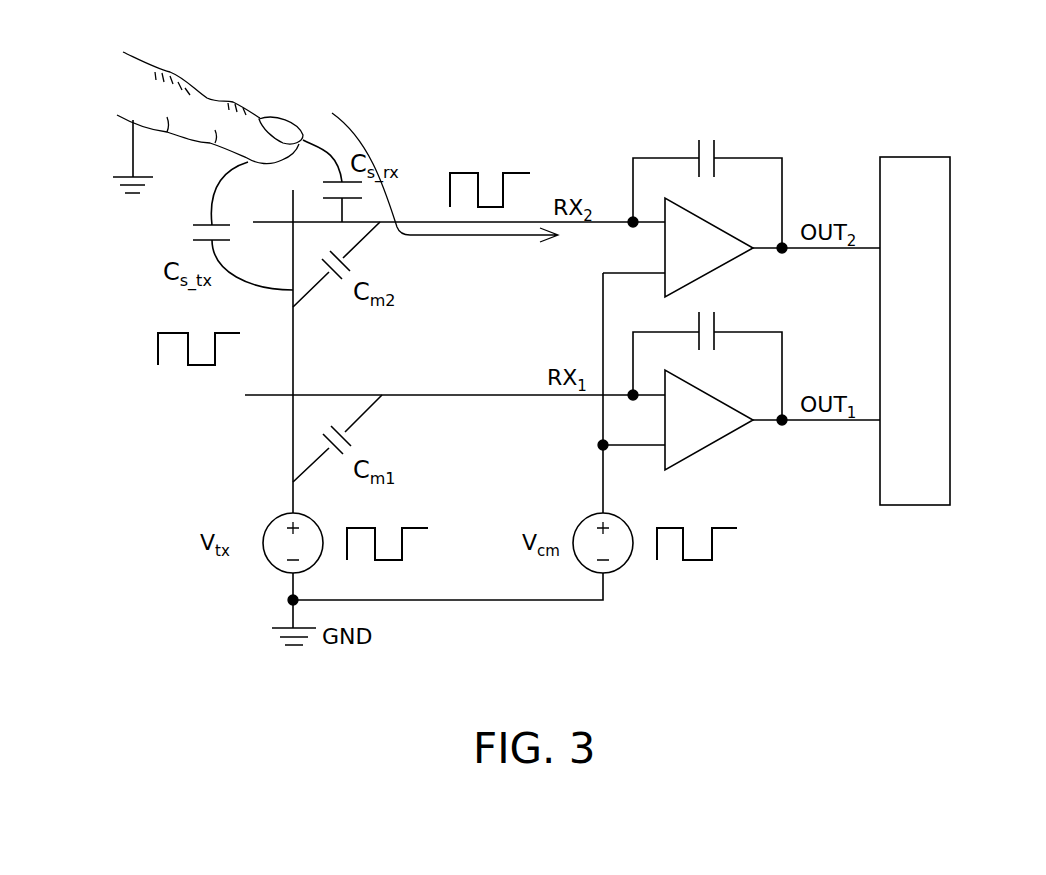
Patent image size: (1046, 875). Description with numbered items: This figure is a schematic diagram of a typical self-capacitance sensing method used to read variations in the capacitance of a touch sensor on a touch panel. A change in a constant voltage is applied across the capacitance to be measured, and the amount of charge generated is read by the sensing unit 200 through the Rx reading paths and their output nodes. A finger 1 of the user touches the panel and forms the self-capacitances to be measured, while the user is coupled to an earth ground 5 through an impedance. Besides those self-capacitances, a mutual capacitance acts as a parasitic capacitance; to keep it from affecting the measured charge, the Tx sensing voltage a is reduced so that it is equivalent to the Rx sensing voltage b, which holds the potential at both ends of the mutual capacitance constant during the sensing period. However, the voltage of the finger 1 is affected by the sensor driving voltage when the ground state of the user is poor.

The finger 1 is at (203, 98).
The earth ground 5 is at (128, 177).
The sensing unit 200 is at (915, 157).
The Tx sensing voltage a is at (158, 350).
The Rx sensing voltage b is at (462, 173).